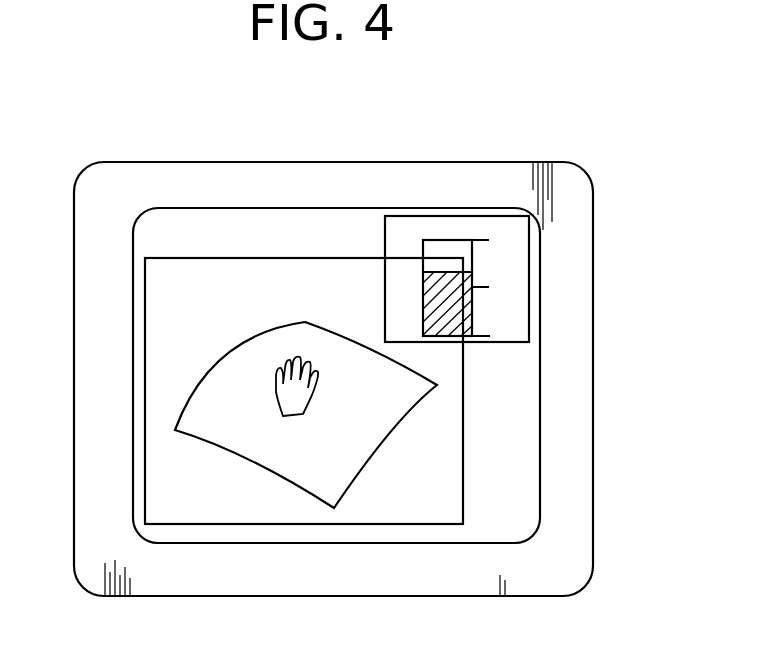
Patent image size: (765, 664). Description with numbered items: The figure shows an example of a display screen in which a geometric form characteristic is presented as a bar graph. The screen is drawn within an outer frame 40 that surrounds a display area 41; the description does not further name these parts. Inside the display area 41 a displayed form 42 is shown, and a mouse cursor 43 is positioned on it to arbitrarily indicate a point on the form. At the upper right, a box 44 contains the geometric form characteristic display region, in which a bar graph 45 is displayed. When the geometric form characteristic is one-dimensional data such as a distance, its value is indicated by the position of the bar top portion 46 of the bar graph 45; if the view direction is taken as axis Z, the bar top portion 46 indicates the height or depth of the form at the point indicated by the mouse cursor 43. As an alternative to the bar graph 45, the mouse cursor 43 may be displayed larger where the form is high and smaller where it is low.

The housing 40 is at (160, 162).
The display screen 41 is at (278, 257).
The curved surface image 42 is at (418, 392).
The mouse cursor 43 is at (275, 402).
The gauge display box 44 is at (458, 215).
The bar graph 45 is at (472, 310).
The bar top portion 46 is at (472, 257).